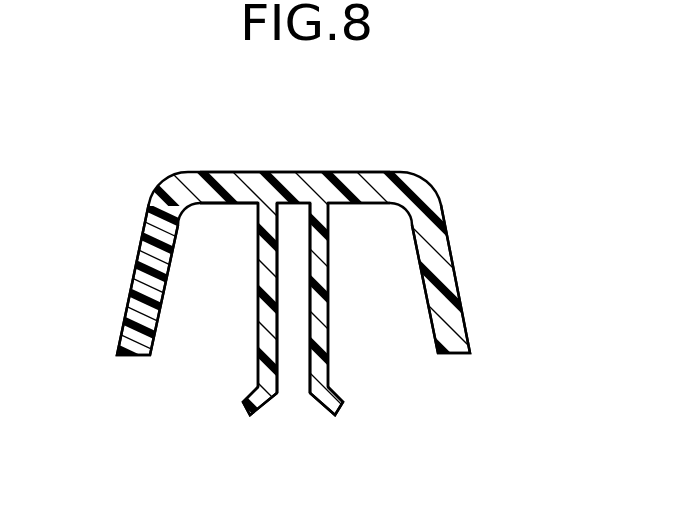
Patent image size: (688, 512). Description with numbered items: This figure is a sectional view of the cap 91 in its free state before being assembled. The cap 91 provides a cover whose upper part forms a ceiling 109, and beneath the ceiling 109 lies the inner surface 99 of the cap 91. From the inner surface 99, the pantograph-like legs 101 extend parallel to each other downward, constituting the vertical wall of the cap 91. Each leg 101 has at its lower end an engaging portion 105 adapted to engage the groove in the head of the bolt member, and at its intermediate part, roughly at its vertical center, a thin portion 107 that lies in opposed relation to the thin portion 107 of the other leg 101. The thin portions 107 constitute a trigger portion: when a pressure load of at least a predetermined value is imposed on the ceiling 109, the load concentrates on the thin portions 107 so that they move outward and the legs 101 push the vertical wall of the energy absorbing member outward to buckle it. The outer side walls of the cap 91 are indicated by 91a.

The cap 91 is at (391, 171).
The side wall of cap 91a is at (140, 272).
The inner surface 99 is at (223, 207).
The ceiling 109 is at (305, 180).
The thin portions 107 is at (278, 303).
The engaging portion 105 is at (248, 399).
The legs 101 is at (299, 413).